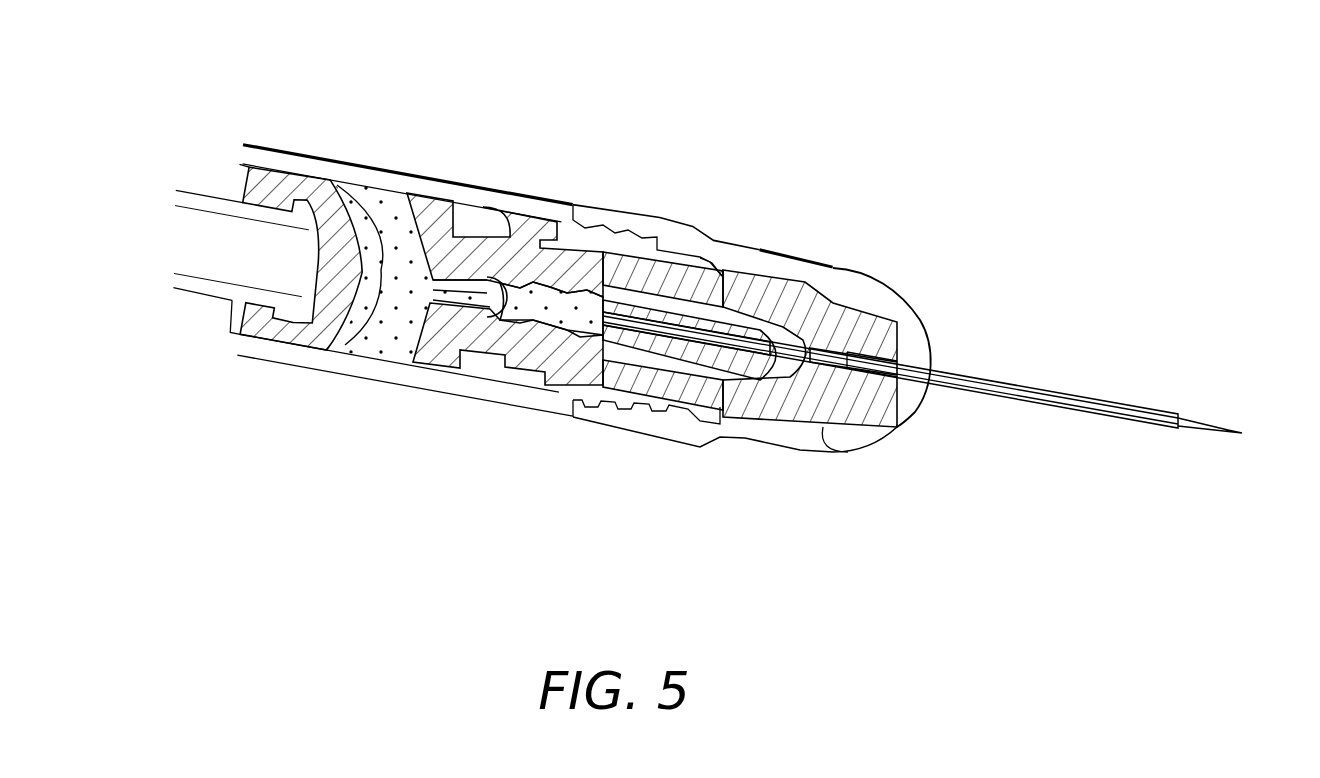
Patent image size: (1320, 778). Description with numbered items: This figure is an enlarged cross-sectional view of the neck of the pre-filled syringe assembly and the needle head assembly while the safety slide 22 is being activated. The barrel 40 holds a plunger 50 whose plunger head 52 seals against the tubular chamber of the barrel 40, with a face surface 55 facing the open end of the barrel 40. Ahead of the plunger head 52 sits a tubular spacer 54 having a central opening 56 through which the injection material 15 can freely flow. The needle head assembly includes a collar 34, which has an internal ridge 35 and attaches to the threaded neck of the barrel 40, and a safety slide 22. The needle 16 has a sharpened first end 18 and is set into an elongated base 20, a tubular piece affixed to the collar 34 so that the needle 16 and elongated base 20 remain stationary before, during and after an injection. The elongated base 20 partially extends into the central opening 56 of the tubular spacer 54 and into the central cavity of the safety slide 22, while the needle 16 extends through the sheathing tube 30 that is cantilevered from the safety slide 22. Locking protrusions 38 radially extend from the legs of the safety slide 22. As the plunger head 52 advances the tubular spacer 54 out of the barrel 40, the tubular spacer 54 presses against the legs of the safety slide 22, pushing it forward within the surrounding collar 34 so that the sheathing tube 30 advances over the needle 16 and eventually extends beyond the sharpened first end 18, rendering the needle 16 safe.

The injection material 15 is at (370, 340).
The needle 16 is at (1193, 417).
The sharpened first end 18 is at (1243, 433).
The elongated base 20 is at (747, 360).
The safety slide 22 is at (868, 302).
The sheathing tube 30 is at (1025, 385).
The collar 34 is at (660, 217).
The internal ridge 35 is at (713, 267).
The locking protrusions 38 is at (632, 263).
The barrel 40 is at (505, 192).
The plunger 50 is at (185, 235).
The plunger head 52 is at (312, 195).
The tubular spacer 54 is at (492, 365).
The face surface 55 is at (377, 196).
The central opening 56 is at (565, 323).